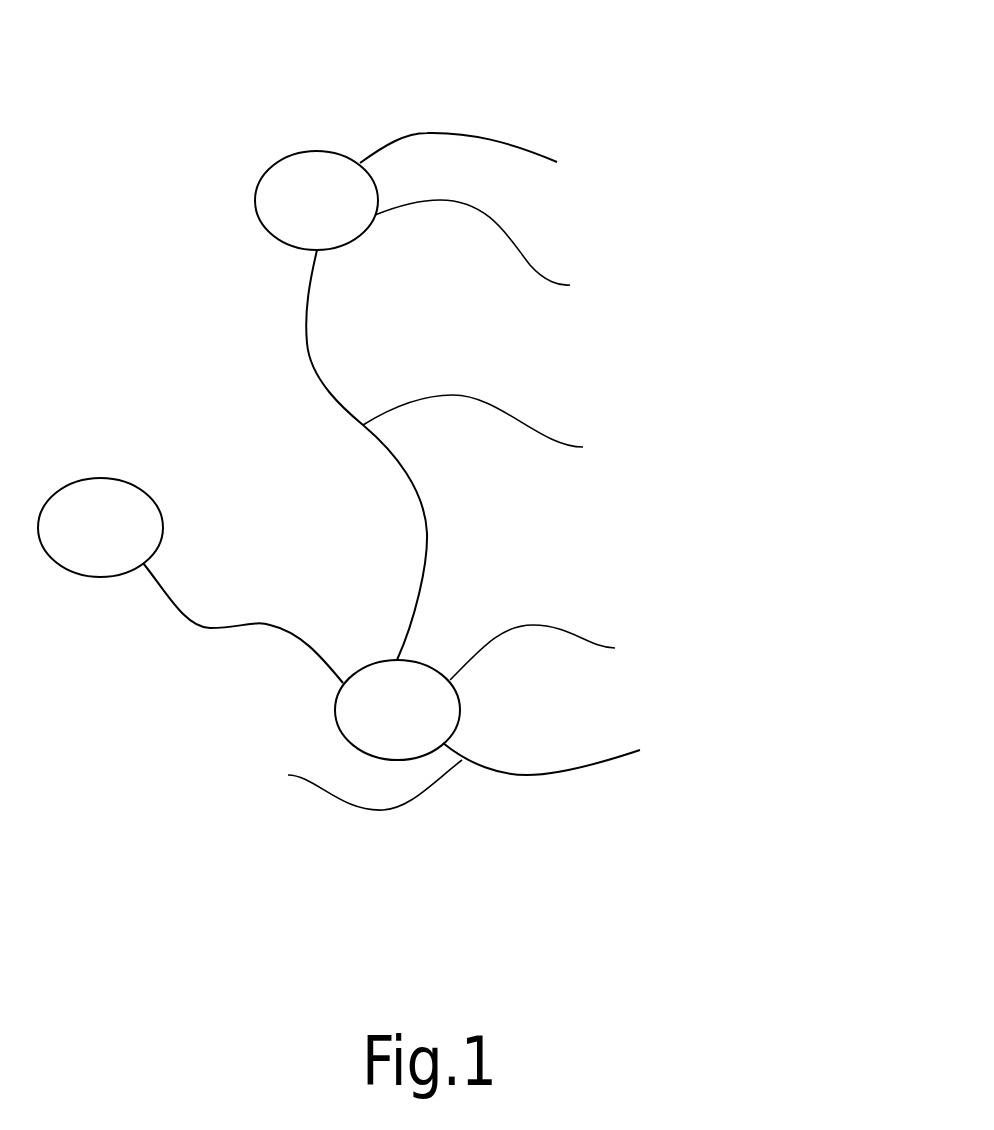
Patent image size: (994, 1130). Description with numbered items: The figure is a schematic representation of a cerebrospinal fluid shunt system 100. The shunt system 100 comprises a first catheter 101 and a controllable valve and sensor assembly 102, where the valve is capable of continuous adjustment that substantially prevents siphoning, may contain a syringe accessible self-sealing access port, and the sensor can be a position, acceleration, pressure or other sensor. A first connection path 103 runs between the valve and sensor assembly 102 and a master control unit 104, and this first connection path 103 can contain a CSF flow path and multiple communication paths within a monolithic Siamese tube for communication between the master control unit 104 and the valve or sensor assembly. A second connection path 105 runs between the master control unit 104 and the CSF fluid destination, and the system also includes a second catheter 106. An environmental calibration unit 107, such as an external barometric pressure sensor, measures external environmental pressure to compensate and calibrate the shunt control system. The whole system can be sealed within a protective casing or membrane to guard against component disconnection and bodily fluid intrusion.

The CSF shunt system 100 is at (177, 132).
The first catheter 101 is at (507, 143).
The valve and sensor assembly 102 is at (570, 285).
The first connection path 103 is at (583, 447).
The master control unit 104 is at (615, 648).
The second connection path 105 is at (288, 775).
The second catheter 106 is at (603, 762).
The environmental calibration unit 107 is at (100, 478).